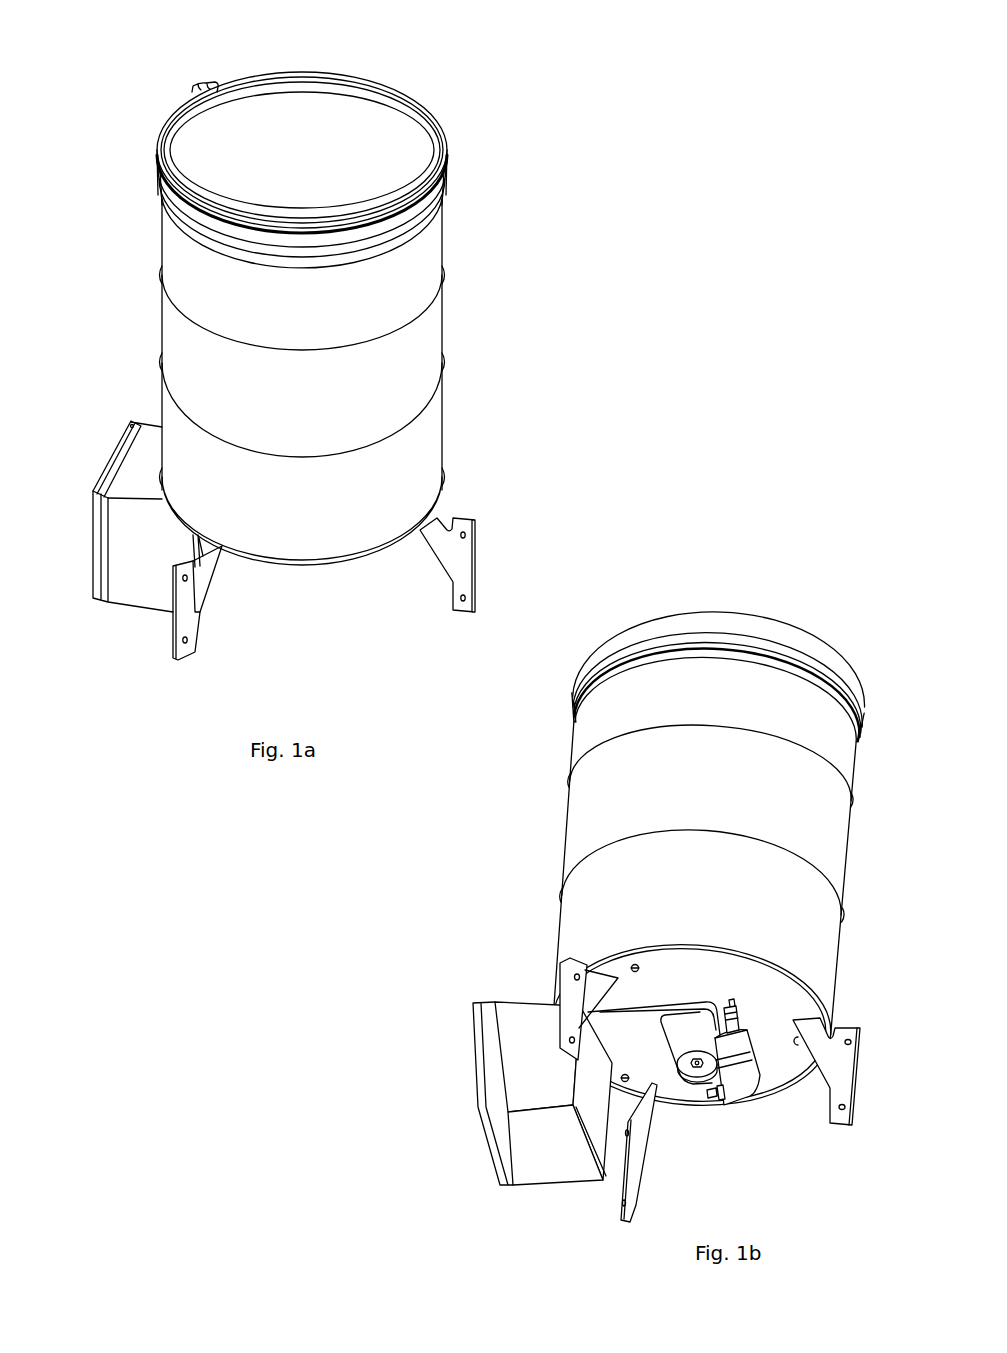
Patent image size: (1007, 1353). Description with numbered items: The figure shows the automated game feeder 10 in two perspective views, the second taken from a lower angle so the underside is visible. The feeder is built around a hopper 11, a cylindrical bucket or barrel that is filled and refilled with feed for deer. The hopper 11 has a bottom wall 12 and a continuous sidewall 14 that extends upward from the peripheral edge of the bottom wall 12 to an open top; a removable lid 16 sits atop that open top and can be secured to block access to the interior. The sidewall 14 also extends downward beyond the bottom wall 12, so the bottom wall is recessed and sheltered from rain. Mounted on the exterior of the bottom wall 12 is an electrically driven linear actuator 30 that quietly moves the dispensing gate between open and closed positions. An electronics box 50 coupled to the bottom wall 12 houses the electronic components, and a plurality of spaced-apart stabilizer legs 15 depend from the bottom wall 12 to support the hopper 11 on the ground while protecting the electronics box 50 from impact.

In FIG. 1A, the automated game feeder 10 is at (346, 339).
In FIG. 1B, the automated game feeder 10 is at (686, 840).
In FIG. 1A, the hopper 11 is at (244, 291).
In FIG. 1B, the hopper 11 is at (674, 830).
In FIG. 1B, the bottom wall 12 is at (757, 987).
In FIG. 1A, the sidewall 14 is at (393, 398).
In FIG. 1B, the sidewall 14 is at (704, 875).
In FIG. 1A, the stabilizer legs 15 is at (185, 628).
In FIG. 1B, the stabilizer legs 15 is at (580, 998).
In FIG. 1A, the lid 16 is at (378, 125).
In FIG. 1B, the lid 16 is at (719, 669).
In FIG. 1B, the linear actuator 30 is at (743, 1088).
In FIG. 1A, the electronics box 50 is at (128, 523).
In FIG. 1B, the electronics box 50 is at (526, 1162).